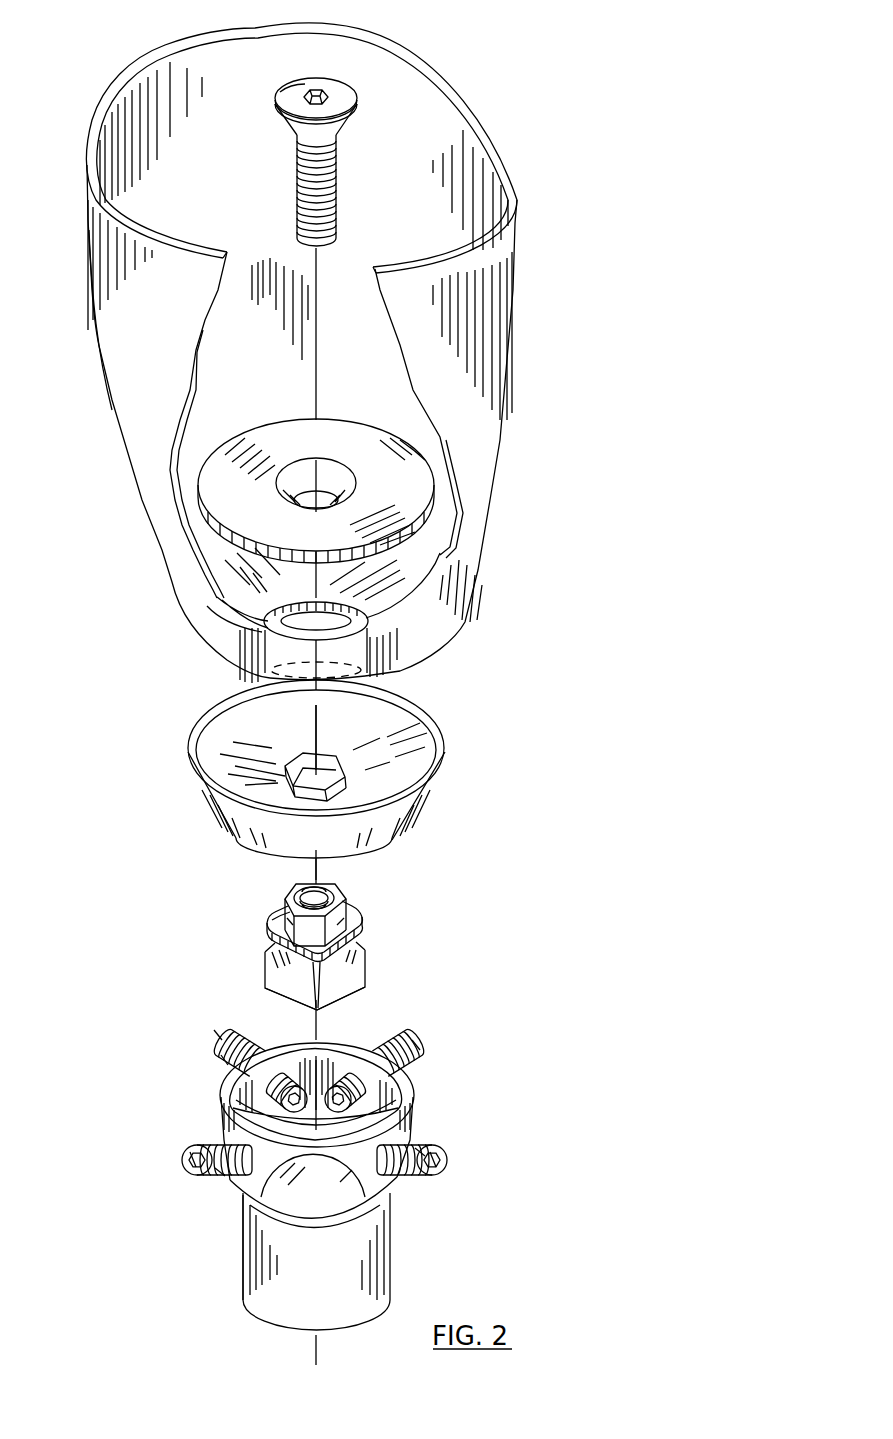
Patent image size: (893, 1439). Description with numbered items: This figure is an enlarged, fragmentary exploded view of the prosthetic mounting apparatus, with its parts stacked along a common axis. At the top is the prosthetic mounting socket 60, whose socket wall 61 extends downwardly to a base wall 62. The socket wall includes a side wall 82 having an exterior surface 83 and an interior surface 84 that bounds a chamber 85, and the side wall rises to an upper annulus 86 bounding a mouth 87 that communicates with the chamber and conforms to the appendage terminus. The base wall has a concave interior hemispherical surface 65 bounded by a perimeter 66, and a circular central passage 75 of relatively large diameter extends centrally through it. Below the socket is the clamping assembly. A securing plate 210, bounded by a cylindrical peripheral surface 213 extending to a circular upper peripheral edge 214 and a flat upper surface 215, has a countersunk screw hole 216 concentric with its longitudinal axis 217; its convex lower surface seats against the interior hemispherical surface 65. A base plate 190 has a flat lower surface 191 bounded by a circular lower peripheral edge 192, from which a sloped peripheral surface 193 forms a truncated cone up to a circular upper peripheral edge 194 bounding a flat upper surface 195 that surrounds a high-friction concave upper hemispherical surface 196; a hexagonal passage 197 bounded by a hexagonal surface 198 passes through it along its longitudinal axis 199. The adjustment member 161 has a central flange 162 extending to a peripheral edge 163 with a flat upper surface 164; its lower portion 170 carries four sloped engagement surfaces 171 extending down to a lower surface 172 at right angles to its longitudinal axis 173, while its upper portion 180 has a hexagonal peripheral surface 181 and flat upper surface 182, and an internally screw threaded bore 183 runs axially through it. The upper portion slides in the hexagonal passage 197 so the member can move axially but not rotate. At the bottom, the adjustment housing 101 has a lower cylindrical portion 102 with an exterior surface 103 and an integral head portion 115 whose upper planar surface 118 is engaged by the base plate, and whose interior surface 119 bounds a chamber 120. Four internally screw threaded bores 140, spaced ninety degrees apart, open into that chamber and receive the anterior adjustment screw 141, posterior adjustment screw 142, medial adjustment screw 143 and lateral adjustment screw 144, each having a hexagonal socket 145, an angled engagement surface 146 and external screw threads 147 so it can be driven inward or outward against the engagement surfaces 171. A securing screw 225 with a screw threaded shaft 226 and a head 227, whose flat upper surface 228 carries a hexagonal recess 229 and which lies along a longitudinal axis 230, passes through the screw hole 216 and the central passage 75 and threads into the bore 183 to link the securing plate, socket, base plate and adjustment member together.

The prosthetic mounting socket 60 is at (308, 342).
The socket wall 61 is at (497, 470).
The base wall 62 is at (440, 553).
The concave interior hemispherical surface 65 is at (250, 592).
The perimeter 66 is at (213, 575).
The central passage 75 is at (360, 630).
The side wall 82 is at (93, 310).
The exterior surface 83 is at (142, 318).
The interior surface 84 is at (188, 193).
The chamber 85 is at (423, 160).
The upper annulus 86 is at (405, 50).
The mouth 87 is at (238, 50).
The adjustment housing 101 is at (311, 1170).
The lower cylindrical portion 102 is at (270, 1272).
The exterior surface 103 is at (320, 1277).
The head portion 115 is at (327, 1119).
The upper planar surface 118 is at (397, 1080).
The interior surface 119 is at (247, 1083).
The chamber 120 is at (327, 1073).
The internally screw threaded bore 140 is at (288, 1075).
The anterior adjustment screw 141 is at (420, 1153).
The posterior adjustment screw 142 is at (220, 1060).
The medial adjustment screw 143 is at (413, 1050).
The lateral adjustment screw 144 is at (235, 1215).
The hexagonal socket 145 is at (187, 1160).
The engagement surface 146 is at (237, 1117).
The external screw threads 147 is at (227, 1038).
The adjustment member 161 is at (329, 932).
The central flange 162 is at (350, 923).
The peripheral edge 163 is at (357, 957).
The flat upper surface 164 is at (280, 922).
The lower portion 170 is at (328, 976).
The sloped engagement surface 171 is at (272, 985).
The lower surface 172 is at (283, 1003).
The longitudinal axis 173 is at (317, 863).
The upper portion 180 is at (307, 883).
The hexagonal peripheral surface 181 is at (303, 927).
The flat upper surface 182 is at (340, 900).
The internally screw threaded bore 183 is at (300, 882).
The base plate 190 is at (297, 769).
The flat lower surface 191 is at (233, 838).
The circular lower peripheral edge 192 is at (417, 828).
The sloped peripheral surface 193 is at (420, 807).
The circular upper peripheral edge 194 is at (183, 743).
The flat upper surface 195 is at (195, 722).
The concave upper hemispherical surface 196 is at (359, 741).
The hexagonal passage 197 is at (330, 777).
The hexagonal surface 198 is at (300, 765).
The longitudinal axis 199 is at (317, 708).
The securing plate 210 is at (278, 477).
The cylindrical peripheral surface 213 is at (253, 547).
The circular upper peripheral edge 214 is at (403, 437).
The flat upper surface 215 is at (376, 497).
The countersunk screw hole 216 is at (330, 472).
The longitudinal axis 217 is at (318, 428).
The securing screw 225 is at (321, 151).
The screw threaded shaft 226 is at (336, 195).
The head 227 is at (355, 100).
The flat upper surface 228 is at (293, 95).
The hexagonal recess 229 is at (320, 92).
The longitudinal axis 230 is at (318, 272).